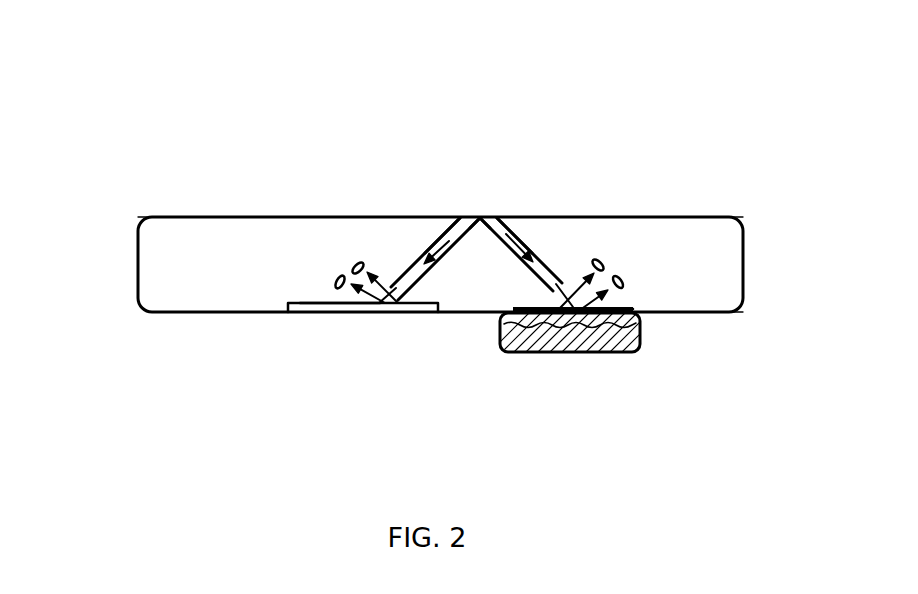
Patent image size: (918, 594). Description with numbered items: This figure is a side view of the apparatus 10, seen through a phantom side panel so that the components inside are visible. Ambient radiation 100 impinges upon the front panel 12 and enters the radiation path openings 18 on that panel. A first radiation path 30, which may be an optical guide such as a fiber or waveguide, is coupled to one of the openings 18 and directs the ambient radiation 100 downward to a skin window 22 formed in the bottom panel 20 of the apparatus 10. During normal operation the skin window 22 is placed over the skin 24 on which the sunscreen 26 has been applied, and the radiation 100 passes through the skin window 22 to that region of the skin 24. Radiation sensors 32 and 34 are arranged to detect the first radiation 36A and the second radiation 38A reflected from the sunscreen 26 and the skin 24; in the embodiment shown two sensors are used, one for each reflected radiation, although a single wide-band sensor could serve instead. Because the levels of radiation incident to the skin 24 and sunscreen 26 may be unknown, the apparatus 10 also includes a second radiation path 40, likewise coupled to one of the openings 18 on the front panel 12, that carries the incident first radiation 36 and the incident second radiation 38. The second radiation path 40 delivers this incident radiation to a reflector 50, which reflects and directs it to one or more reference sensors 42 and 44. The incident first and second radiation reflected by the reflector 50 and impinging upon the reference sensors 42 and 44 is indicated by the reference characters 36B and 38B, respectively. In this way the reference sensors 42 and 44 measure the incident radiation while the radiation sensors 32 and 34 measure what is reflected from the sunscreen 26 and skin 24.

The apparatus 10 is at (105, 125).
The front panel 12 is at (183, 217).
The radiation path openings 18 is at (465, 218).
The bottom panel 20 is at (183, 314).
The skin window 22 is at (503, 303).
The skin 24 is at (600, 348).
The sunscreen 26 is at (528, 351).
The first radiation path 30 is at (518, 217).
The radiation sensor 32 is at (604, 268).
The radiation sensor 34 is at (626, 282).
The incident first radiation 36 is at (432, 243).
The incident second radiation 38 is at (520, 235).
The reflected first radiation 36A is at (561, 300).
The reflected incident first radiation 36B is at (387, 288).
The reflected second radiation 38A is at (627, 305).
The reflected incident second radiation 38B is at (338, 311).
The second radiation path 40 is at (440, 217).
The reference sensor 42 is at (352, 268).
The reference sensor 44 is at (333, 285).
The reflector 50 is at (423, 312).
The ambient radiation 100 is at (453, 125).